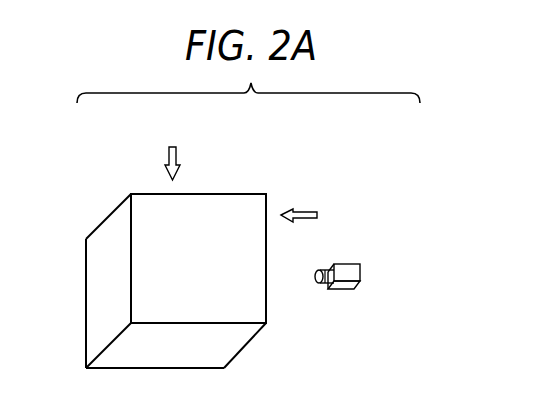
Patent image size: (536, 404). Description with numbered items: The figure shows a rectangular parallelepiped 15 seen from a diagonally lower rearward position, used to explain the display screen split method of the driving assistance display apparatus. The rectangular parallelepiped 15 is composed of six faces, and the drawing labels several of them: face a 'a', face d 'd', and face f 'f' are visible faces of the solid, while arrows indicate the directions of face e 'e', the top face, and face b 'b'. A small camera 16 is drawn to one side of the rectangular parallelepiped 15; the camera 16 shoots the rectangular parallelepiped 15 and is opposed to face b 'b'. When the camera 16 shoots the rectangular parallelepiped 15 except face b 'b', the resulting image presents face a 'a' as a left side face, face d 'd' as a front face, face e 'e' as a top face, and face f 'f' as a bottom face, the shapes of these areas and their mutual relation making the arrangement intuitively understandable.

The rectangular parallelepiped 15 is at (194, 283).
The camera 16 is at (362, 273).
The face a is at (193, 314).
The face d is at (101, 324).
The face f is at (172, 363).
The face e is at (172, 147).
The face b is at (310, 218).